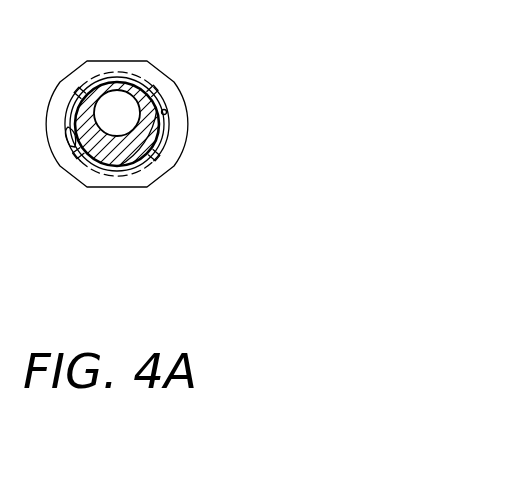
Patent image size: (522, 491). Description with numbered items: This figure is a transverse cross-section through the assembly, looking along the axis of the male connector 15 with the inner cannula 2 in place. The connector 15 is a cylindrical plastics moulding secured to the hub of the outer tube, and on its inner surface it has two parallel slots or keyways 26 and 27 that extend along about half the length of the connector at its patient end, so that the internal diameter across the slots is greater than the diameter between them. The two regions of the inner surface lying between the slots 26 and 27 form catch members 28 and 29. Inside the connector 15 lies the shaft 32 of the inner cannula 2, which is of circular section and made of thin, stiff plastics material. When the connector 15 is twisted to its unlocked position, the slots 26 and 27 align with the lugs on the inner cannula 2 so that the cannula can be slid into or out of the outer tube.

The inner cannula 2 is at (150, 137).
The male connector 15 is at (175, 130).
The slot 26 is at (71, 142).
The slot 27 is at (167, 111).
The catch member 28 is at (92, 82).
The catch member 29 is at (120, 163).
The shaft 32 is at (149, 110).